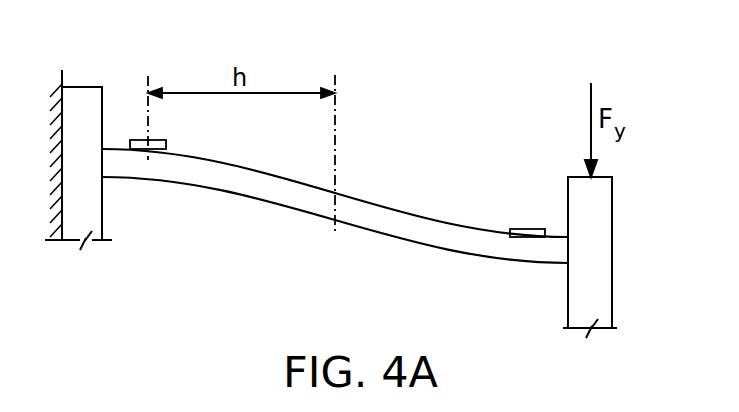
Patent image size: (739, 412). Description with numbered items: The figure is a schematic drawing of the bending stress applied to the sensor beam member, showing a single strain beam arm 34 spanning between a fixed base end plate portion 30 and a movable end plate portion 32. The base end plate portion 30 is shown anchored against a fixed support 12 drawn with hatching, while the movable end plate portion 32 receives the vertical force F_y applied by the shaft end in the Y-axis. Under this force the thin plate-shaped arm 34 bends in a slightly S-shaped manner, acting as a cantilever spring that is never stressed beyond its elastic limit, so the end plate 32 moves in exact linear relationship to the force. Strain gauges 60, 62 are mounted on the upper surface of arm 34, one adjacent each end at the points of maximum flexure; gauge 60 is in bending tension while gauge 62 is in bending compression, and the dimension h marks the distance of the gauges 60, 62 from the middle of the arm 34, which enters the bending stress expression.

The fixed wall / support 12 is at (62, 82).
The base end plate portion 30 is at (93, 213).
The movable end plate portion 32 is at (603, 240).
The strain beam arm 34 is at (393, 218).
The strain gauge 60 is at (141, 140).
The strain gauge 62 is at (522, 229).